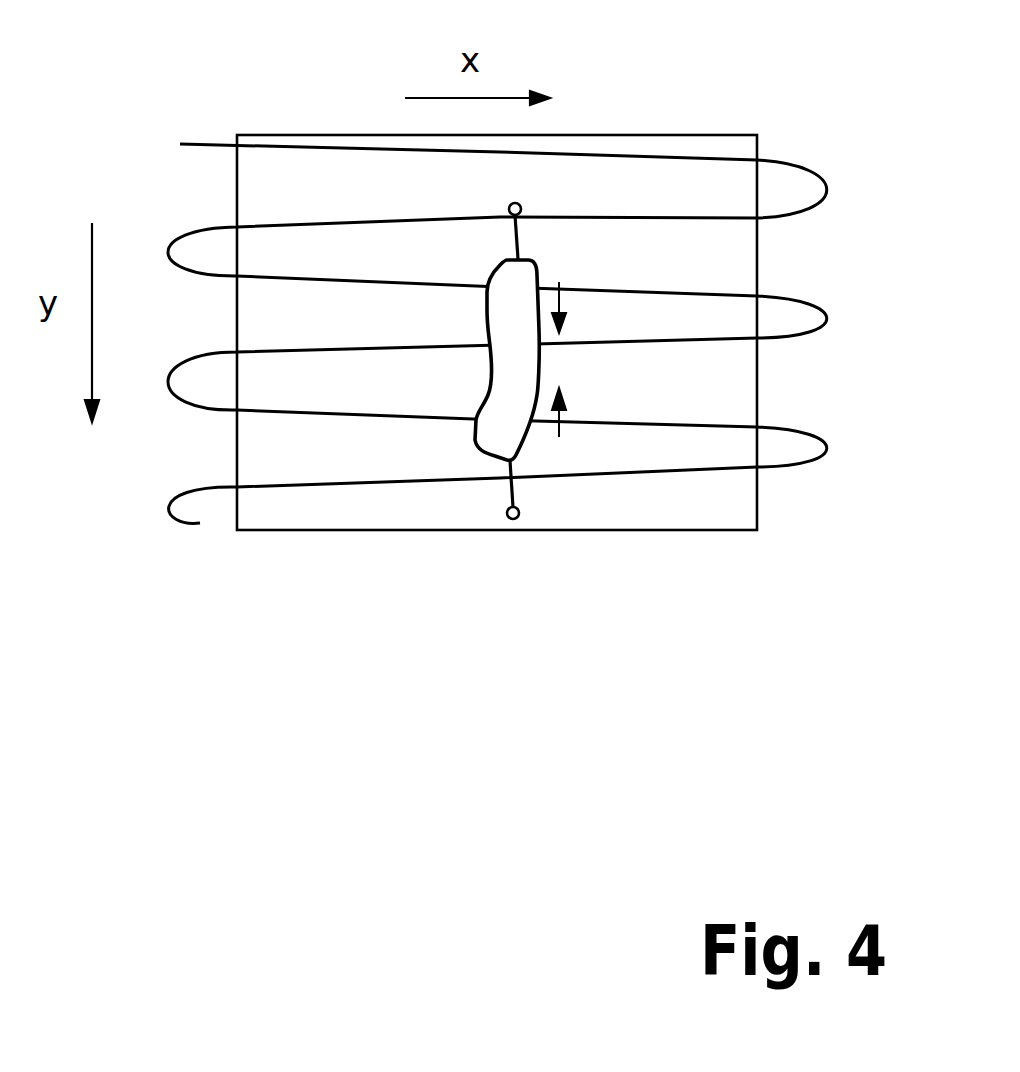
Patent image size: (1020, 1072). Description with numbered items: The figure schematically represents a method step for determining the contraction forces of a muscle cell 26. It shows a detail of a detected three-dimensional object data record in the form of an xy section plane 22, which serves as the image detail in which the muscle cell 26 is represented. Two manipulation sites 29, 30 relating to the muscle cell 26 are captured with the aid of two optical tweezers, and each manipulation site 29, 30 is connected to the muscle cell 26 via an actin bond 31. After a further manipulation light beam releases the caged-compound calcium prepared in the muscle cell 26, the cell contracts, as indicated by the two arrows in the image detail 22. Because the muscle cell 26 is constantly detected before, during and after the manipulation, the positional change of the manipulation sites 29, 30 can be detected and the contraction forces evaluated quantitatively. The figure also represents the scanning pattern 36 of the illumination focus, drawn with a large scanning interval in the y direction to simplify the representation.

The xy section plane 22 is at (757, 362).
The muscle cell 26 is at (502, 440).
The manipulation site 29 is at (515, 203).
The manipulation site 30 is at (513, 520).
The actin bond 31 is at (512, 233).
The scanning pattern 36 is at (727, 213).